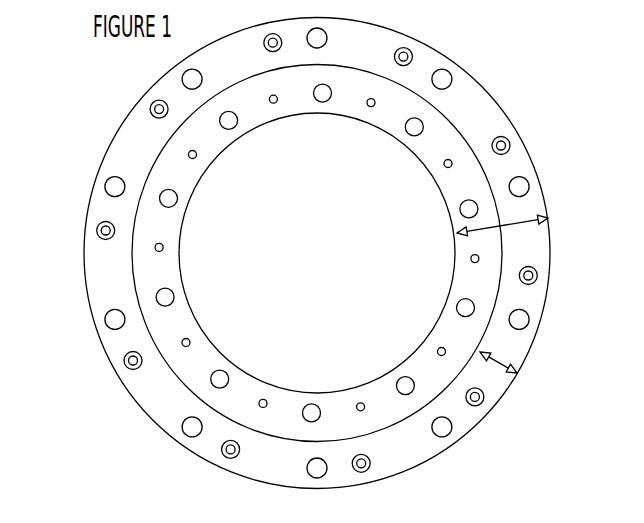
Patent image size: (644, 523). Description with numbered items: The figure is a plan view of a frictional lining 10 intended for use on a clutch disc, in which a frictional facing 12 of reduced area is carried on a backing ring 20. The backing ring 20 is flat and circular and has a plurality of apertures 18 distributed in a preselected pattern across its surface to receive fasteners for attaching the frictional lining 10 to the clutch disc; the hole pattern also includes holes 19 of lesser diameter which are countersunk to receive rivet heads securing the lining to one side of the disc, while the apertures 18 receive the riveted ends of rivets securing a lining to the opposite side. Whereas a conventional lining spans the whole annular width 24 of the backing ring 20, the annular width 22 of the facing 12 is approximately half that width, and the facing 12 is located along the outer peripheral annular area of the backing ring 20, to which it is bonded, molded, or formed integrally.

The frictional lining 10 is at (90, 130).
The frictional facing 12 is at (102, 270).
The apertures 18 is at (212, 384).
The holes 19 is at (142, 356).
The backing ring 20 is at (443, 329).
The annular width of facing 22 is at (498, 363).
The annular width of backing ring 24 is at (502, 225).